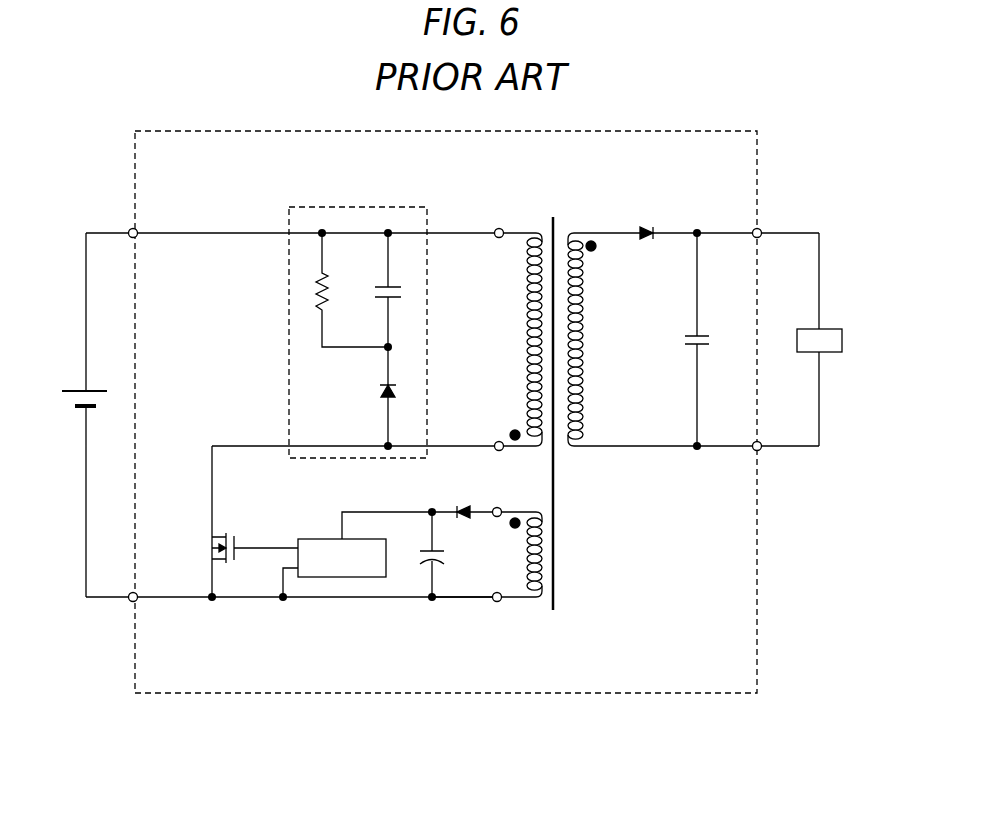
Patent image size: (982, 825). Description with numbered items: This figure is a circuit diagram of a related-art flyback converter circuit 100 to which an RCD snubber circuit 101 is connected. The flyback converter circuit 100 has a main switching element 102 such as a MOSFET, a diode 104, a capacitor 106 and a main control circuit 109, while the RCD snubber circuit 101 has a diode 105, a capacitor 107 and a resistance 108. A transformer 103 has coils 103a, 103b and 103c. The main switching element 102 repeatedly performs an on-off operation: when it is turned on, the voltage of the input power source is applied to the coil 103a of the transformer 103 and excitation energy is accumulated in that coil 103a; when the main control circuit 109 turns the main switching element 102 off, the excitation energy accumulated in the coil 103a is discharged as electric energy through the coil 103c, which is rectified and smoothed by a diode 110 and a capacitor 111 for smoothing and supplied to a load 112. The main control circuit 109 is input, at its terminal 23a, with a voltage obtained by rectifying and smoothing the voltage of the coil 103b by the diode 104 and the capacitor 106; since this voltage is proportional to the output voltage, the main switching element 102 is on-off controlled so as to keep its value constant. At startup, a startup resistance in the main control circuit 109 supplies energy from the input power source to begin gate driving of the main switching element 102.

The flyback converter circuit 100 is at (506, 693).
The RCD snubber circuit 101 is at (385, 207).
The main switching element 102 is at (203, 543).
The transformer 103 is at (633, 399).
The coil 103a is at (526, 302).
The coil 103b is at (537, 582).
The coil 103c is at (585, 333).
The diode 104 is at (476, 504).
The diode 105 is at (401, 388).
The capacitor 106 is at (420, 551).
The capacitor 107 is at (399, 288).
The resistance 108 is at (313, 305).
The main control circuit 109 is at (307, 538).
The diode 110 is at (650, 222).
The capacitor for smoothing 111 is at (700, 332).
The load 112 is at (830, 329).
The power supply terminal of control circuit 23a is at (342, 537).